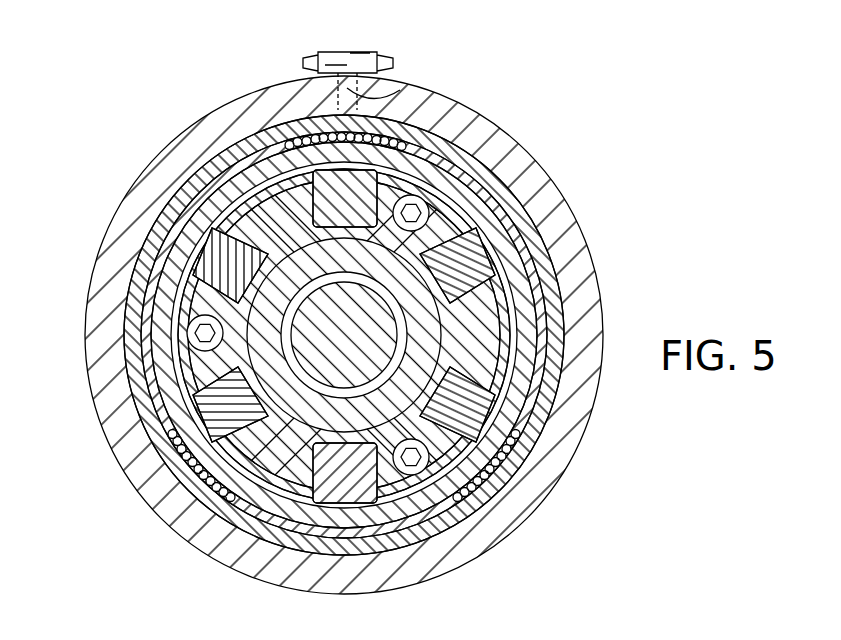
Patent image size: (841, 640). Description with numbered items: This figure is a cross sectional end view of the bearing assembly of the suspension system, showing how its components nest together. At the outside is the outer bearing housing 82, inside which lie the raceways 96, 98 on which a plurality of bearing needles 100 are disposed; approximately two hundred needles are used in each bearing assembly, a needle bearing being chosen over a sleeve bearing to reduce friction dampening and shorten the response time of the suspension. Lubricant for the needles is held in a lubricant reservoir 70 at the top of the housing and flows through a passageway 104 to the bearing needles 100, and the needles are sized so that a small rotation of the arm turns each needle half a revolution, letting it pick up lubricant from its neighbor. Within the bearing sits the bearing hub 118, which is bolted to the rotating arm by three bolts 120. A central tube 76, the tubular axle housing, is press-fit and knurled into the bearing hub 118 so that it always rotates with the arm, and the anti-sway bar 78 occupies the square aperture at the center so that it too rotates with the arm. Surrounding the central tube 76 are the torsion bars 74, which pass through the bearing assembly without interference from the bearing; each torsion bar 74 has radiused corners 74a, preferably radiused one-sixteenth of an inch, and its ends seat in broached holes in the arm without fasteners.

The lubricant reservoir 70 is at (388, 56).
The torsion bar 74 is at (482, 406).
The radiused corners 74a is at (372, 482).
The central tube 76 is at (212, 506).
The anti-sway bar 78 is at (305, 348).
The outer bearing housing 82 is at (478, 134).
The raceway 96 is at (546, 216).
The raceway 98 is at (532, 322).
The bearing needles 100 is at (440, 150).
The passageway 104 is at (392, 100).
The bearing hub 118 is at (190, 280).
The bolts 120 is at (420, 212).